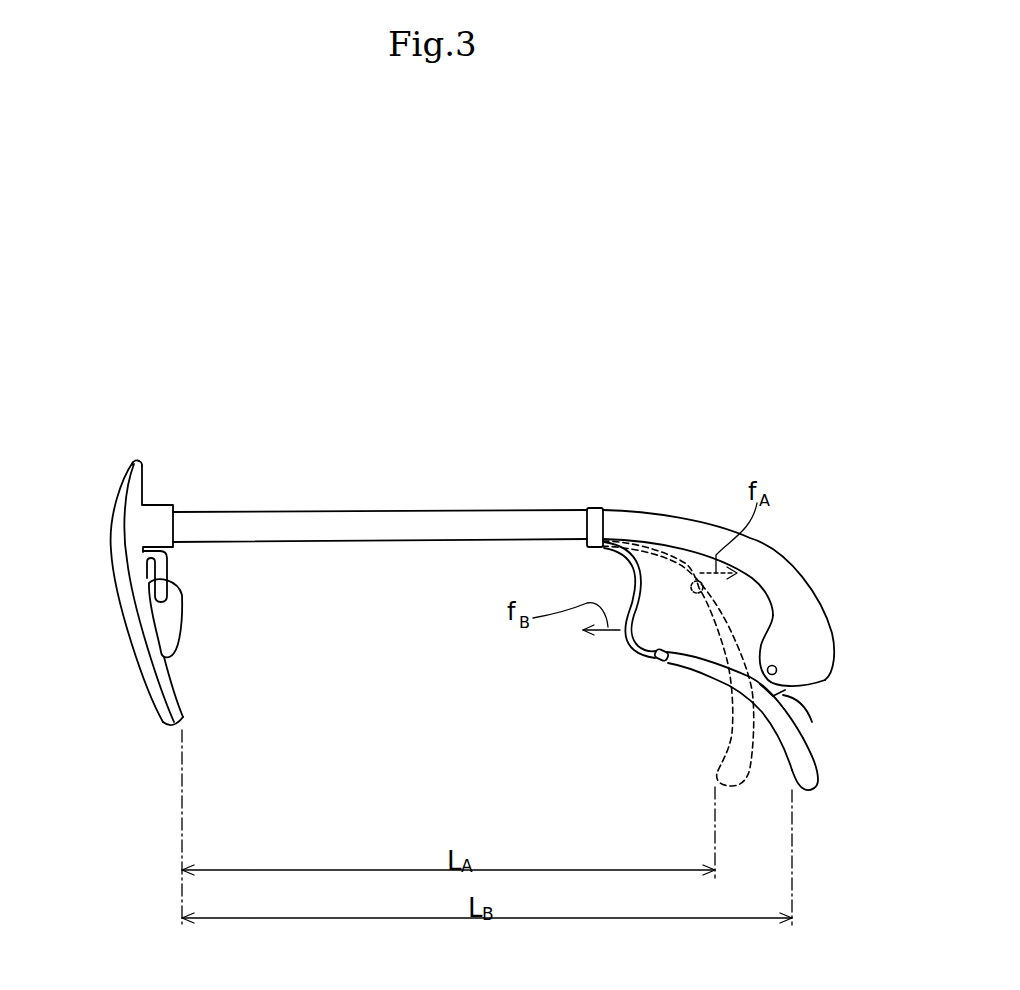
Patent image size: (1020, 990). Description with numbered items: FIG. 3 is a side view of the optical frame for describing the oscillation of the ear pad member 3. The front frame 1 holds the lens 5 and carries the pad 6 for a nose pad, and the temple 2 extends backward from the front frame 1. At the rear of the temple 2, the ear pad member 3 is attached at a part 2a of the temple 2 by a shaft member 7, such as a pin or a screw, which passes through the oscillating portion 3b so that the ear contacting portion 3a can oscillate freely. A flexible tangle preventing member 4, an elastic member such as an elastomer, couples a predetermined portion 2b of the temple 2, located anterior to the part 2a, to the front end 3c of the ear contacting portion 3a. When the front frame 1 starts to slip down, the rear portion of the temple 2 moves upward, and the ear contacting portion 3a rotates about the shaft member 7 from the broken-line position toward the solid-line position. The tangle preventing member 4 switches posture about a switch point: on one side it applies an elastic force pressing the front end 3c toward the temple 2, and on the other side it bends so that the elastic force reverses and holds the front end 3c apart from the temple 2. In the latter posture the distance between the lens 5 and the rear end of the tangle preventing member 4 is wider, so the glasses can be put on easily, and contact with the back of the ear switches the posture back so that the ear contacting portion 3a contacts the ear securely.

The front frame 1 is at (135, 462).
The temple 2 is at (392, 520).
The part of the temple where the ear pad member is attached 2a is at (808, 675).
The predetermined portion of the temple 2b is at (597, 507).
The ear pad member 3 is at (818, 797).
The ear contacting portion 3a is at (722, 680).
The oscillating portion 3b is at (787, 693).
The front end of the ear contacting portion 3c is at (657, 663).
The tangle preventing member 4 is at (640, 579).
The lens 5 is at (117, 540).
The pad 6 is at (170, 623).
The shaft member 7 is at (772, 665).